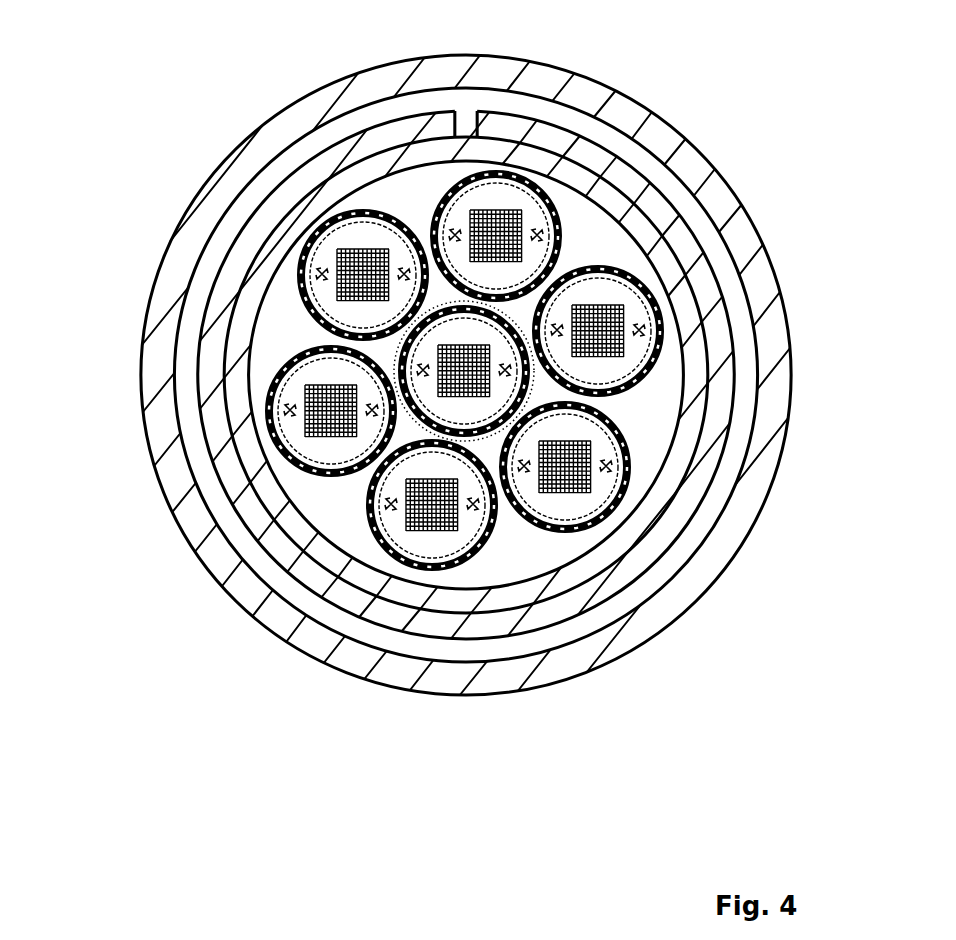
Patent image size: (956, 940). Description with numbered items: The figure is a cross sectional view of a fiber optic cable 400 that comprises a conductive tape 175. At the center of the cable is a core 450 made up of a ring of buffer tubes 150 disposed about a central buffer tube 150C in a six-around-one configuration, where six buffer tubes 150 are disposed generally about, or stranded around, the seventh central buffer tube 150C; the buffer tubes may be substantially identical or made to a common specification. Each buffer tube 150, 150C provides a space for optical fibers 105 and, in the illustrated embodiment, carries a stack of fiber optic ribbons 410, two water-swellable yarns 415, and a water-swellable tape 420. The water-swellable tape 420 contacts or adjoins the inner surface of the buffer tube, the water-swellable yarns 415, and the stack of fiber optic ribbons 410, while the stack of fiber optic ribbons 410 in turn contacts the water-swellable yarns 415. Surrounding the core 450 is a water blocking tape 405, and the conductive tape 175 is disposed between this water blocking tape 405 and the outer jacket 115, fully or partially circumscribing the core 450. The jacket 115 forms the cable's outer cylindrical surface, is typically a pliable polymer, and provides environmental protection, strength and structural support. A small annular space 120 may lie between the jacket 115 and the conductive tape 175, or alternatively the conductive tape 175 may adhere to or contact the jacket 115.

The fiber optic cable 400 is at (156, 78).
The jacket 115 is at (280, 131).
The annular space 120 is at (469, 413).
The conductive tape 175 is at (359, 73).
The water blocking tape 405 is at (396, 375).
The core 450 is at (664, 421).
The buffer tube 150 is at (350, 198).
The central buffer tube 150C is at (522, 313).
The optical fibers 105 is at (322, 362).
The stack of fiber optic ribbons 410 is at (383, 540).
The water-swellable tape 420 is at (410, 522).
The water-swellable yarns 415 is at (392, 498).